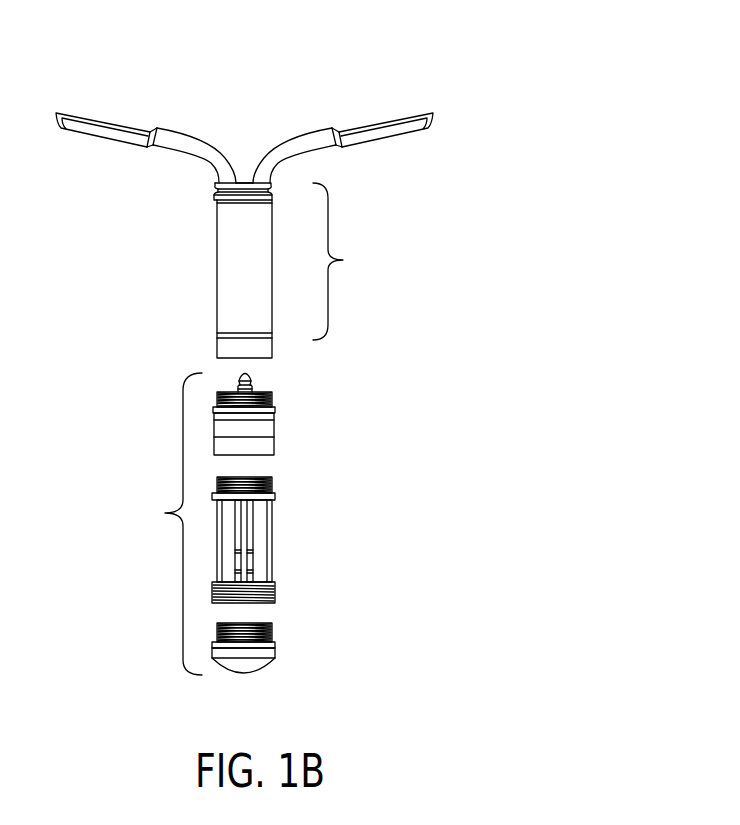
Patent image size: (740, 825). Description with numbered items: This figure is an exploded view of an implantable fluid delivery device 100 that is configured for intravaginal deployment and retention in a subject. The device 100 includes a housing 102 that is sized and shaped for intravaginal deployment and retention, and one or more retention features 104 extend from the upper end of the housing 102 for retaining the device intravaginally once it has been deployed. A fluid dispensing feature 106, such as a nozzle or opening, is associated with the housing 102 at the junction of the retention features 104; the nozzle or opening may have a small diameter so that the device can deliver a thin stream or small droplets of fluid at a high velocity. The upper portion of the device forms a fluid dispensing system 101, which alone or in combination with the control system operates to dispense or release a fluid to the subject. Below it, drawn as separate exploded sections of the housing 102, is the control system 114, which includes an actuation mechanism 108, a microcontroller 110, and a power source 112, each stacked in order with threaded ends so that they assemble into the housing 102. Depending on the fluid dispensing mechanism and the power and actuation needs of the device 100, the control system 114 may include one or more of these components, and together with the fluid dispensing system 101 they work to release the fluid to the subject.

The implantable fluid delivery device 100 is at (348, 88).
The fluid dispensing system 101 is at (346, 261).
The housing 102 is at (216, 268).
The retention features 104 is at (177, 131).
The fluid dispensing feature 106 is at (245, 181).
The actuation mechanism 108 is at (273, 437).
The microcontroller 110 is at (272, 530).
The power source 112 is at (263, 663).
The control system 114 is at (167, 524).